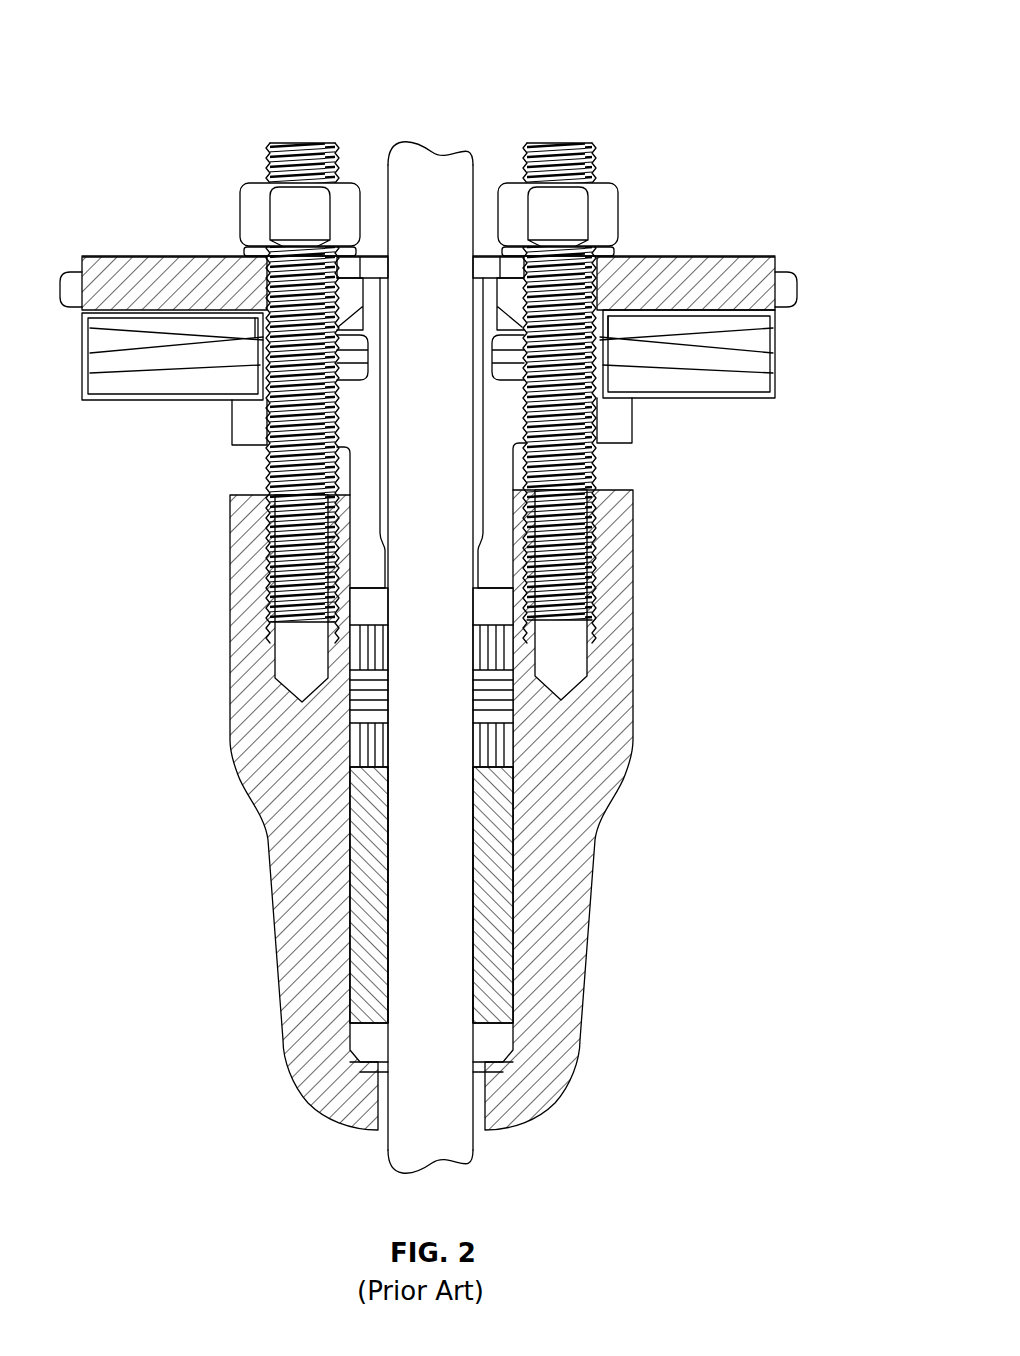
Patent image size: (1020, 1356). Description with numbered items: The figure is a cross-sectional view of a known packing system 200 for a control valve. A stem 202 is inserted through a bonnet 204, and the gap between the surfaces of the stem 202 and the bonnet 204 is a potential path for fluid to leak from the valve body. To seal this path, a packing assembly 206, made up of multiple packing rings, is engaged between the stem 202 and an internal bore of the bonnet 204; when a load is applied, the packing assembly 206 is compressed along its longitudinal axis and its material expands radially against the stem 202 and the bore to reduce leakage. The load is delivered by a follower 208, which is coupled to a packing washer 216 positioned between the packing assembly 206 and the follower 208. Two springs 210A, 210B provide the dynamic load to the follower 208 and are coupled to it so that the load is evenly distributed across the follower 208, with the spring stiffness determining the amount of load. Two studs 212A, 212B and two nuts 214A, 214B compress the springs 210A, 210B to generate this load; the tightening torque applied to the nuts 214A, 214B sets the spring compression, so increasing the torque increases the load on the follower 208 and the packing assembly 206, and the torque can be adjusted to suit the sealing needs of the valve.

The known packing system 200 is at (562, 36).
The stem 202 is at (412, 137).
The bonnet 204 is at (588, 887).
The packing assembly 206 is at (513, 730).
The follower 208 is at (498, 495).
The spring 210A is at (775, 338).
The spring 210B is at (775, 358).
The stud 212A is at (303, 143).
The stud 212B is at (568, 143).
The nut 214A is at (240, 218).
The nut 214B is at (620, 222).
The packing washer 216 is at (498, 610).